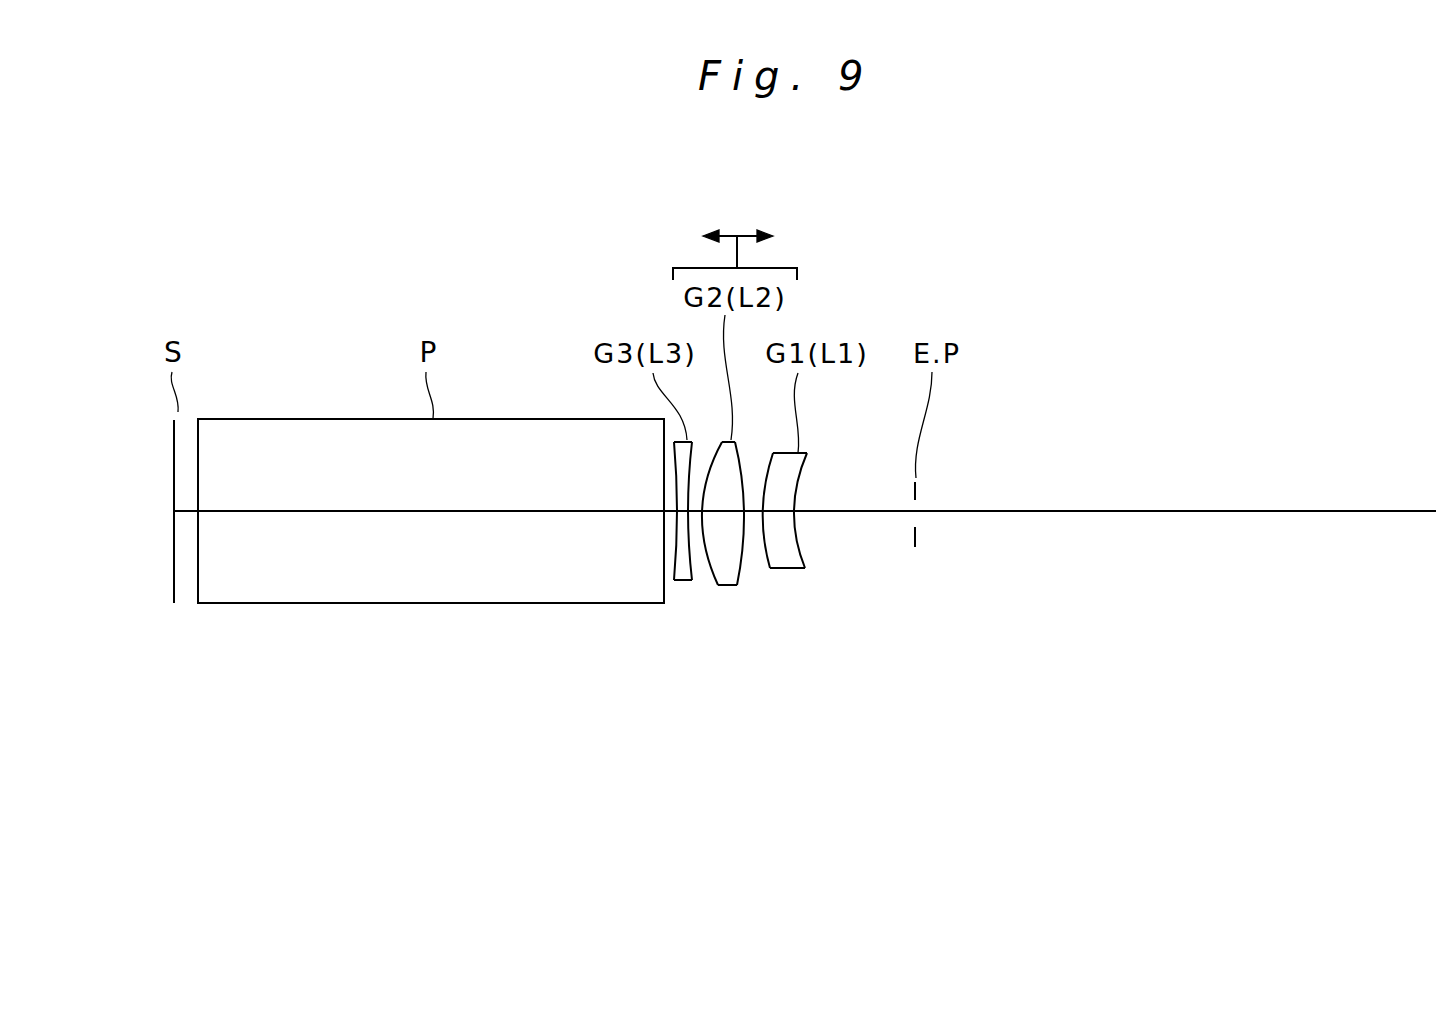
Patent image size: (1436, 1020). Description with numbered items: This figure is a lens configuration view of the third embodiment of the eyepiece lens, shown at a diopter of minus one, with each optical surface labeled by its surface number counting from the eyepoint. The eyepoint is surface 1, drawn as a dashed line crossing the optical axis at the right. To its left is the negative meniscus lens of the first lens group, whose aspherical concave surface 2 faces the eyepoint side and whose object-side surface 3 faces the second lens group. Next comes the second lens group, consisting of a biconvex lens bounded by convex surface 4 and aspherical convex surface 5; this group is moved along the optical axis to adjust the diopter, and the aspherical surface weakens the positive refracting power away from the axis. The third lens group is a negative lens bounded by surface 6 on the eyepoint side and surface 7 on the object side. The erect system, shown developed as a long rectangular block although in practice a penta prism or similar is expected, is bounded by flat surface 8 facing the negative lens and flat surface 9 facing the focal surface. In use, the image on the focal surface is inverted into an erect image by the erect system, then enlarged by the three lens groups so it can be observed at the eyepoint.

The surface number 1 (eyepoint E.P) 1 is at (917, 550).
The surface number 2 (eyepoint-side surface of lens L1) 2 is at (806, 570).
The surface number 3 (object-side surface of lens L1) 3 is at (770, 570).
The surface number 4 (eyepoint-side convex surface of lens L2) 4 is at (738, 586).
The surface number 5 (object-side convex surface of lens L2) 5 is at (718, 586).
The surface number 6 (eyepoint-side surface of lens L3) 6 is at (691, 582).
The surface number 7 (object-side surface of lens L3) 7 is at (673, 582).
The surface number 8 (entrance surface of erect system P) 8 is at (671, 592).
The surface number 9 (exit surface of erect system P toward focal surface S) 9 is at (196, 590).